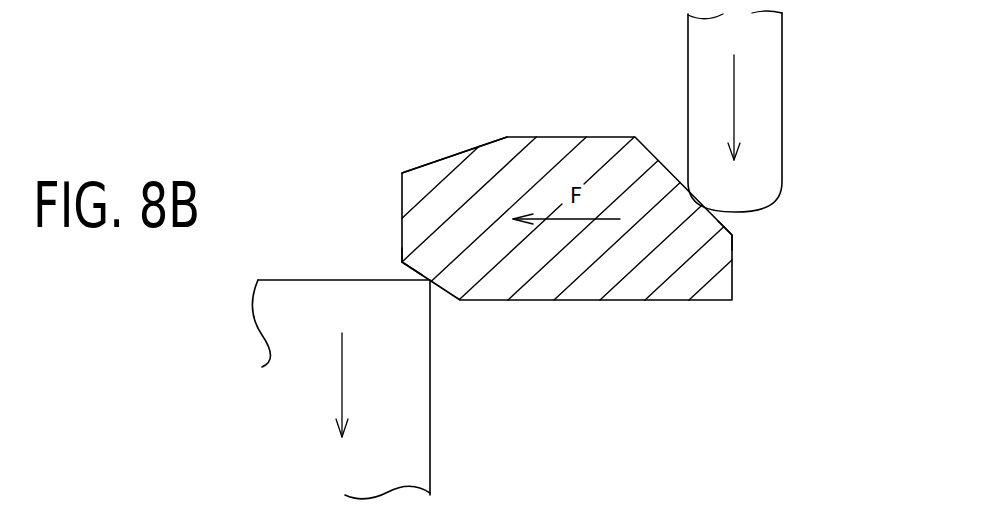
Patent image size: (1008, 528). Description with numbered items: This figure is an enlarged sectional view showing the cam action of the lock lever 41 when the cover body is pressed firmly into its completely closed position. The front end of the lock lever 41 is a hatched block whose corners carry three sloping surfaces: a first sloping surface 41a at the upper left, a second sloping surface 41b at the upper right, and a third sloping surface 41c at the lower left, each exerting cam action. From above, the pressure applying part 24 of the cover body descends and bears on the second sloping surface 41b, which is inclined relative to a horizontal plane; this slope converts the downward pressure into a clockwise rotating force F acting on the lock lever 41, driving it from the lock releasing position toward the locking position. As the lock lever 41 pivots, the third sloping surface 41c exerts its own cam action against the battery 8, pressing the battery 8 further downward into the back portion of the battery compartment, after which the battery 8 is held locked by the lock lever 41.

The battery 8 is at (315, 280).
The pressure applying part 24 is at (782, 97).
The lock lever 41 is at (587, 288).
The first sloping surface 41a is at (440, 158).
The second sloping surface 41b is at (733, 233).
The third sloping surface 41c is at (404, 265).